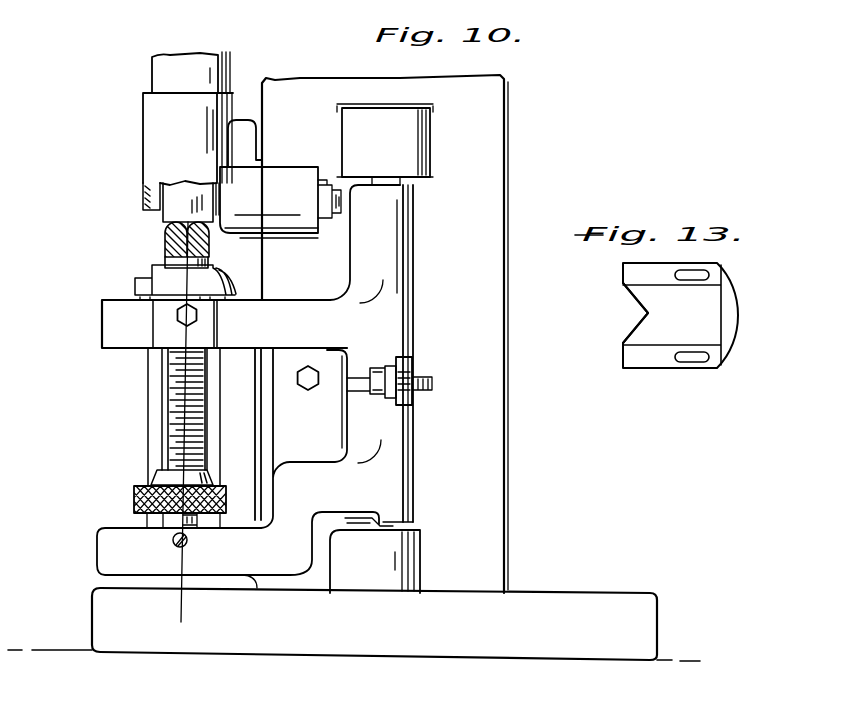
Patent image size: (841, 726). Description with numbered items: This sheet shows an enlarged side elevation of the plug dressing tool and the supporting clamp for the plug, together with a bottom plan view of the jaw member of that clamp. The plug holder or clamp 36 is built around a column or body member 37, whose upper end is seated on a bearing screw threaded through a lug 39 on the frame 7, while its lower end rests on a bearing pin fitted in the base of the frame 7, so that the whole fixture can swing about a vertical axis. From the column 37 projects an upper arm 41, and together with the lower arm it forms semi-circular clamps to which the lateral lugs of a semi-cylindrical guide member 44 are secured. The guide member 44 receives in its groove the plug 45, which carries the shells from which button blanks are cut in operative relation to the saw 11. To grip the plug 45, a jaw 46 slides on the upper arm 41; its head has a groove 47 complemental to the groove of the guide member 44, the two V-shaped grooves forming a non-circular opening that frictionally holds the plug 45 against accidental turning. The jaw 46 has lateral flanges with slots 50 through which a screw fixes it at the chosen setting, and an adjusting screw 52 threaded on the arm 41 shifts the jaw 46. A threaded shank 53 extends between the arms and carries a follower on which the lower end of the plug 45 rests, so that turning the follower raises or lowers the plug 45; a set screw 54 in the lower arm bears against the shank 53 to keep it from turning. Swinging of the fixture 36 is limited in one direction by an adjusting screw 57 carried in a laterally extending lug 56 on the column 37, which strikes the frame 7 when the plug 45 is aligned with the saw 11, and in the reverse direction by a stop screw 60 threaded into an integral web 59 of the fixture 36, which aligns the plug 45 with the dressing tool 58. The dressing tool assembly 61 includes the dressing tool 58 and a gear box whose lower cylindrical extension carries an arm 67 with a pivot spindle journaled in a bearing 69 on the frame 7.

In FIG. 10, the frame 7 is at (490, 169).
In FIG. 10, the saw 11 is at (190, 215).
In FIG. 10, the plug holder or clamp 36 is at (432, 283).
In FIG. 10, the column or body member 37 is at (403, 228).
In FIG. 10, the lug 39 is at (418, 138).
In FIG. 10, the upper arm 41 is at (289, 306).
In FIG. 10, the semi-cylindrical guide member 44 is at (123, 533).
In FIG. 10, the plug 45 is at (162, 247).
In FIG. 10, the jaw 46 is at (167, 276).
In FIG. 13, the jaw 46 is at (722, 282).
In FIG. 13, the groove 47 is at (637, 306).
In FIG. 13, the slots 50 is at (689, 352).
In FIG. 10, the adjusting screw 52 is at (198, 318).
In FIG. 10, the threaded shank 53 is at (173, 413).
In FIG. 10, the set screw 54 is at (189, 541).
In FIG. 10, the laterally extending lug 56 is at (407, 369).
In FIG. 10, the adjusting screw 57 is at (372, 393).
In FIG. 10, the dressing tool 58 is at (164, 224).
In FIG. 10, the integral web 59 is at (285, 428).
In FIG. 10, the stop screw 60 is at (301, 388).
In FIG. 10, the dressing tool assembly 61 is at (144, 135).
In FIG. 10, the arm 67 is at (242, 230).
In FIG. 10, the bearing 69 is at (302, 238).